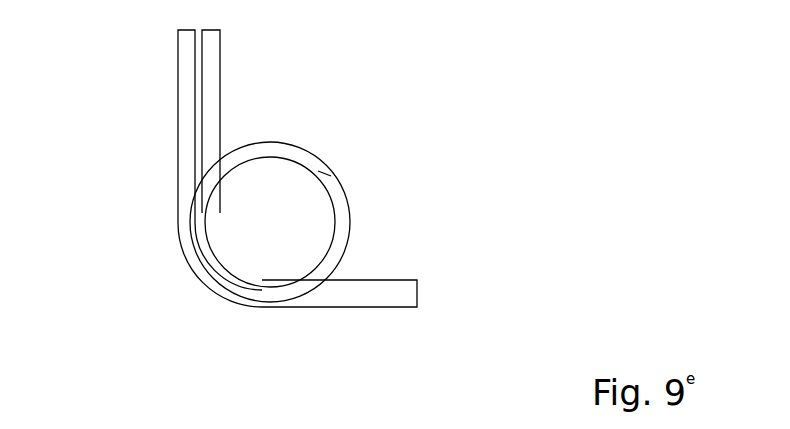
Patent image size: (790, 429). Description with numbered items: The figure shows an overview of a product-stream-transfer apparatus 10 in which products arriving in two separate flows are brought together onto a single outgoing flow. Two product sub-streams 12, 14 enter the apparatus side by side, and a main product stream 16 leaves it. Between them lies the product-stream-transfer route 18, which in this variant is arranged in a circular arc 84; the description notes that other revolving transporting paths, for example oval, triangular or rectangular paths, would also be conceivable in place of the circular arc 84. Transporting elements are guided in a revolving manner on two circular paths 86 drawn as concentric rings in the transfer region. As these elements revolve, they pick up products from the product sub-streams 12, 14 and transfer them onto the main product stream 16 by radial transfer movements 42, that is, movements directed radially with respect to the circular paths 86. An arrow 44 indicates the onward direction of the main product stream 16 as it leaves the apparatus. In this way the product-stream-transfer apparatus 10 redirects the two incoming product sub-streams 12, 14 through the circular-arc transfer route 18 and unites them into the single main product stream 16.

The product-stream-transfer apparatus 10 is at (376, 114).
The product sub-stream 12 is at (187, 70).
The product sub-stream 14 is at (208, 72).
The main product stream 16 is at (373, 290).
The product-stream-transfer route 18 is at (175, 290).
The radial transfer movement 42 is at (230, 207).
The direction of movement 44 is at (500, 294).
The circular arc 84 is at (270, 300).
The circular path 86 is at (330, 169).